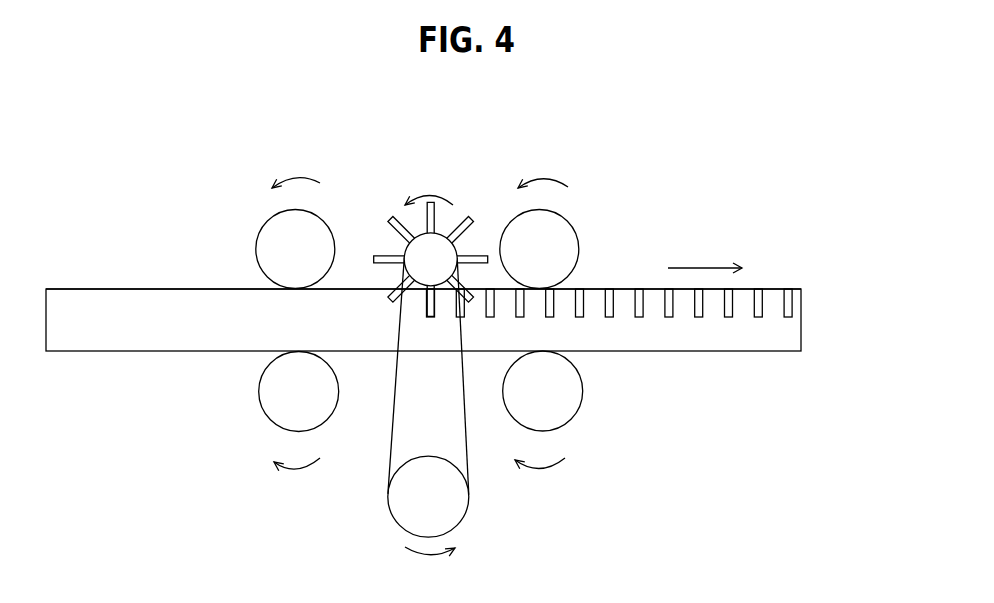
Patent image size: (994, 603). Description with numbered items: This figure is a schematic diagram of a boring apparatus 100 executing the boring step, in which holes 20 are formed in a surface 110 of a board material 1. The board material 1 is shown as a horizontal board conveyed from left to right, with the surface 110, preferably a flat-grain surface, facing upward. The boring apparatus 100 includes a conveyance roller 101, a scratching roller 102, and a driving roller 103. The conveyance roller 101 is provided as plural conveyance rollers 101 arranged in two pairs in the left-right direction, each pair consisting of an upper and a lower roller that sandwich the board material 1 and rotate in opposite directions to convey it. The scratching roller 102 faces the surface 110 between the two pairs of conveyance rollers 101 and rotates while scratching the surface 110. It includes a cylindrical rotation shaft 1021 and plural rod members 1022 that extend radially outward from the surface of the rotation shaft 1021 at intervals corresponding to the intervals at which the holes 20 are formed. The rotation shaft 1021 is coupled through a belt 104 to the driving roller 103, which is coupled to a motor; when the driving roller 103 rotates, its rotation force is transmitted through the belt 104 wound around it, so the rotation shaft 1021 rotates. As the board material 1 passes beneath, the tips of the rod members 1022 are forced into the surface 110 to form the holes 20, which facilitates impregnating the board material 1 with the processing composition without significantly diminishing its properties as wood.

The boring apparatus 100 is at (665, 152).
The board material 1 is at (753, 340).
The surface 110 is at (107, 289).
The holes 20 is at (785, 277).
The conveyance roller 101 is at (272, 233).
The scratching roller 102 is at (395, 200).
The rotation shaft 1021 is at (405, 250).
The rod member 1022 is at (390, 218).
The driving roller 103 is at (458, 507).
The belt 104 is at (390, 447).